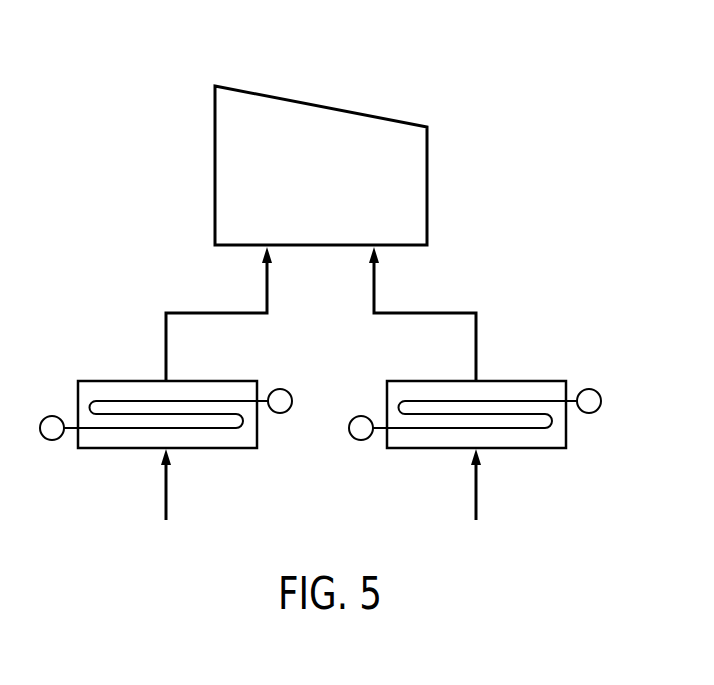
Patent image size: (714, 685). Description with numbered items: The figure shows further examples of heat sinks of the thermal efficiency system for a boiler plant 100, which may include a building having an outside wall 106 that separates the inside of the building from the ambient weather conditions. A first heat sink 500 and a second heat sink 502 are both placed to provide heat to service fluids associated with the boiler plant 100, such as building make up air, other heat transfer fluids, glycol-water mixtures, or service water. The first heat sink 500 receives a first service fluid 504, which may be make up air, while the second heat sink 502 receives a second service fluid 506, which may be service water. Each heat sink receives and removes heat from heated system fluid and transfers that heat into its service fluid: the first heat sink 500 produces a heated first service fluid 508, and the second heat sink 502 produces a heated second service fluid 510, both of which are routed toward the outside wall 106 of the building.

The boiler plant 100 is at (158, 112).
The outside wall 106 is at (320, 105).
The first heat sink 500 is at (122, 380).
The second heat sink 502 is at (522, 380).
The first service fluid 504 is at (163, 489).
The second service fluid 506 is at (479, 489).
The heated first service fluid 508 is at (217, 311).
The heated second service fluid 510 is at (425, 311).